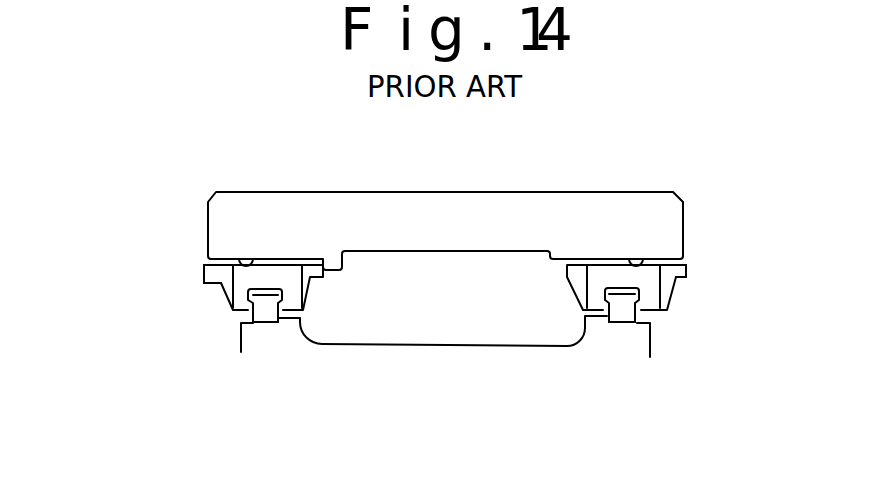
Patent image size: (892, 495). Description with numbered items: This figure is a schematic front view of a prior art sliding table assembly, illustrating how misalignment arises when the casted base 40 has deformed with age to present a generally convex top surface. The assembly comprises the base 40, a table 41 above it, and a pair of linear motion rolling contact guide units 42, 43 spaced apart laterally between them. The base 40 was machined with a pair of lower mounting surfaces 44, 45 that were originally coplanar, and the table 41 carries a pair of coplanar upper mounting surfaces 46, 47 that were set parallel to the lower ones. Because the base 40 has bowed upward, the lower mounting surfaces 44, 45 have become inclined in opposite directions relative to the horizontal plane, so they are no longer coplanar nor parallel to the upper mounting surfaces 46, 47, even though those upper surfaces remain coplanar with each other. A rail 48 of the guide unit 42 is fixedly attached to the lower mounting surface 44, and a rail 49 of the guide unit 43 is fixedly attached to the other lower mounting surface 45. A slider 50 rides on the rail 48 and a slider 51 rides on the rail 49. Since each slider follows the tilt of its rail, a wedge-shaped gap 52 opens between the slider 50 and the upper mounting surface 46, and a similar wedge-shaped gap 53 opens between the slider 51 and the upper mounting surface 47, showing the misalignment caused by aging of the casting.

The base 40 is at (431, 349).
The table 41 is at (468, 210).
The linear motion rolling contact guide unit 42 is at (201, 289).
The linear motion rolling contact guide unit 43 is at (668, 294).
The lower mounting surface 44 is at (244, 321).
The lower mounting surface 45 is at (648, 320).
The upper mounting surface 46 is at (255, 263).
The upper mounting surface 47 is at (635, 263).
The rail 48 is at (264, 324).
The rail 49 is at (626, 324).
The slider 50 is at (206, 273).
The slider 51 is at (688, 277).
The wedge-shaped gap 52 is at (206, 263).
The wedge-shaped gap 53 is at (688, 264).